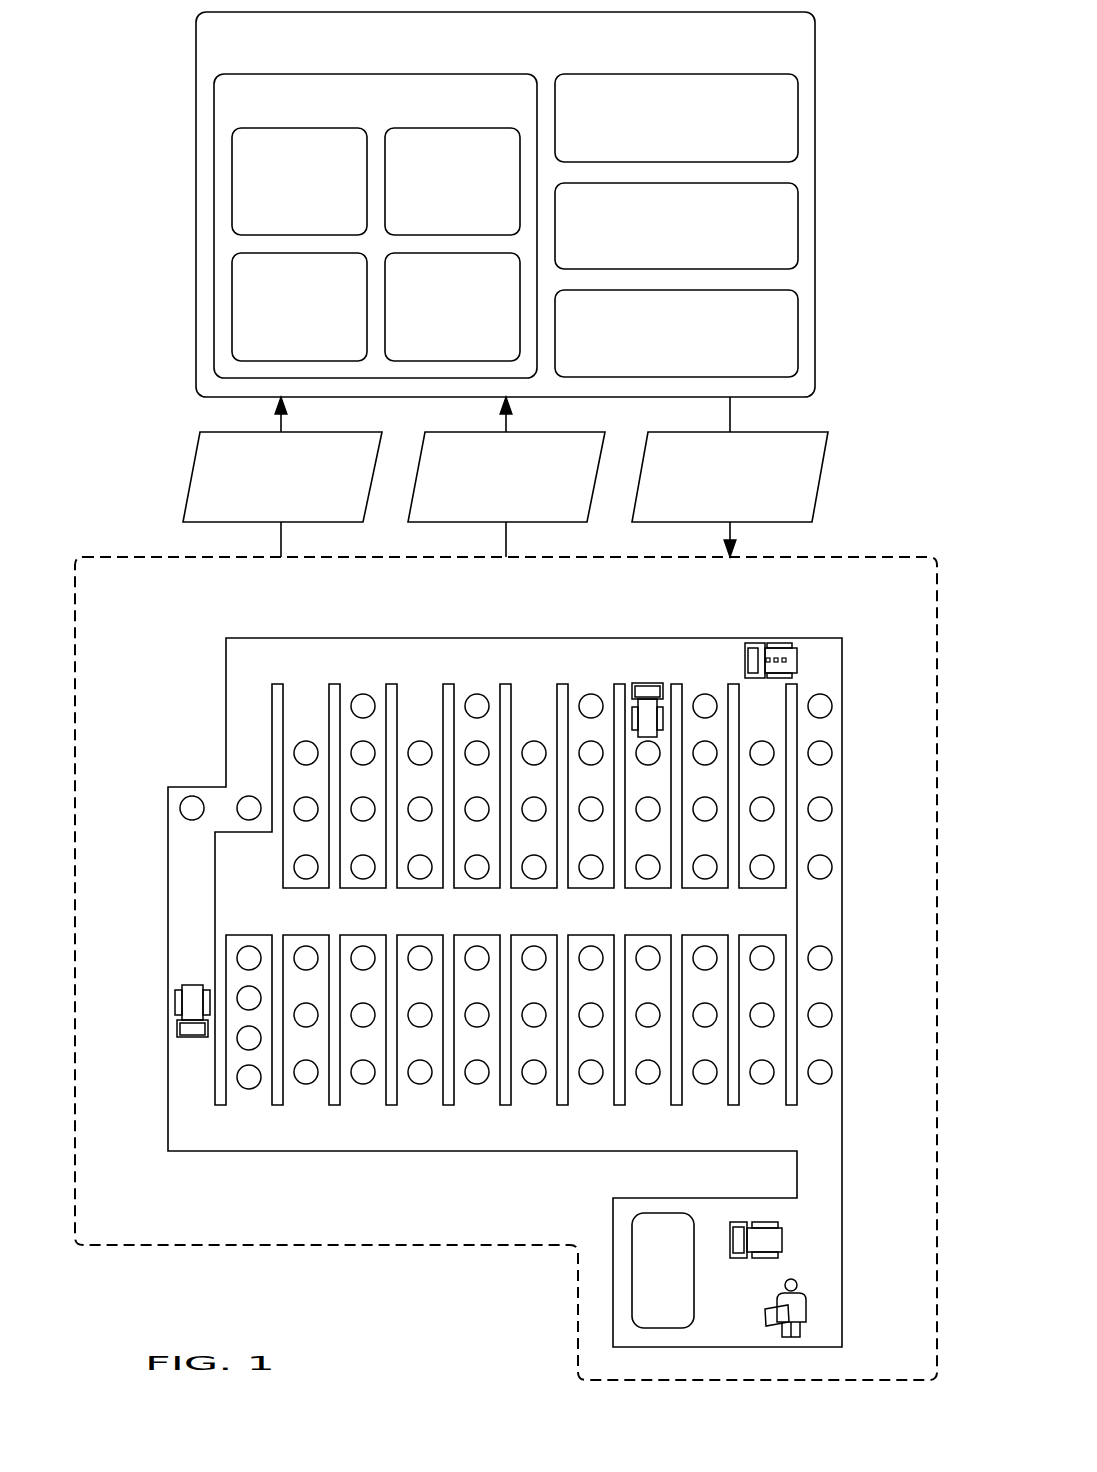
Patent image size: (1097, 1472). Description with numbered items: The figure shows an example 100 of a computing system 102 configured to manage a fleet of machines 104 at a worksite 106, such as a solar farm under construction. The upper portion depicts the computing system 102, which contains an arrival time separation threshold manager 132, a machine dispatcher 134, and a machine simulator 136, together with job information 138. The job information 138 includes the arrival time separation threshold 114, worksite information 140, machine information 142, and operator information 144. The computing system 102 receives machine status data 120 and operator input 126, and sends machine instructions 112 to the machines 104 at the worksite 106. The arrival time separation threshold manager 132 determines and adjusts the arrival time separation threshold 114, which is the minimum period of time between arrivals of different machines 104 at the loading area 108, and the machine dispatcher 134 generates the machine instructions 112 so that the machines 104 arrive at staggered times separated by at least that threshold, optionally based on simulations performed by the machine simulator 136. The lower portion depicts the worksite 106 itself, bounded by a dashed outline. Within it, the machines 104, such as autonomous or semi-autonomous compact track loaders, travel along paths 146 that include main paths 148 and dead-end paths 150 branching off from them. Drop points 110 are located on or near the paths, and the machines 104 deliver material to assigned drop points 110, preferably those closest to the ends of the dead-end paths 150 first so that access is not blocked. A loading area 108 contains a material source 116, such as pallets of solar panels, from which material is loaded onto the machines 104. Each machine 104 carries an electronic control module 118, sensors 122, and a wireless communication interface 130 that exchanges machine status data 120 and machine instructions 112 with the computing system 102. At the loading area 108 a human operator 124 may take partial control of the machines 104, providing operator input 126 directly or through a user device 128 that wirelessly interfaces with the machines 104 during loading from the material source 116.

The example 100 is at (124, 89).
The computing system 102 is at (608, 52).
The machines 104 is at (648, 712).
The worksite 106 is at (168, 606).
The loading area 108 is at (734, 1282).
The drop points 110 is at (192, 808).
The machine instructions 112 is at (747, 510).
The arrival time separation threshold 114 is at (316, 228).
The material source 116 is at (680, 1280).
The electronic control module 118 is at (785, 659).
The machine status data 120 is at (322, 498).
The sensors 122 is at (768, 658).
The human operator 124 is at (790, 1307).
The operator input 126 is at (522, 498).
The user device 128 is at (777, 1320).
The wireless communication interfaces 130 is at (777, 658).
The arrival time separation threshold manager 132 is at (780, 139).
The machine dispatcher 134 is at (783, 234).
The machine simulator 136 is at (777, 343).
The job information 138 is at (463, 110).
The worksite information 140 is at (467, 215).
The machine information 142 is at (316, 340).
The operator information 144 is at (467, 340).
The paths 146 is at (190, 731).
The main paths 148 is at (372, 657).
The dead-end paths 150 is at (293, 845).